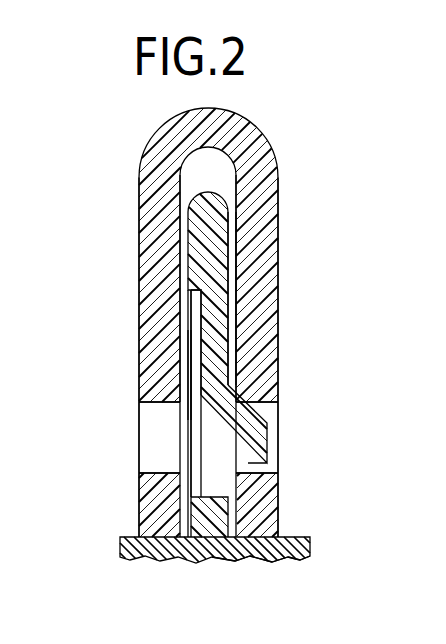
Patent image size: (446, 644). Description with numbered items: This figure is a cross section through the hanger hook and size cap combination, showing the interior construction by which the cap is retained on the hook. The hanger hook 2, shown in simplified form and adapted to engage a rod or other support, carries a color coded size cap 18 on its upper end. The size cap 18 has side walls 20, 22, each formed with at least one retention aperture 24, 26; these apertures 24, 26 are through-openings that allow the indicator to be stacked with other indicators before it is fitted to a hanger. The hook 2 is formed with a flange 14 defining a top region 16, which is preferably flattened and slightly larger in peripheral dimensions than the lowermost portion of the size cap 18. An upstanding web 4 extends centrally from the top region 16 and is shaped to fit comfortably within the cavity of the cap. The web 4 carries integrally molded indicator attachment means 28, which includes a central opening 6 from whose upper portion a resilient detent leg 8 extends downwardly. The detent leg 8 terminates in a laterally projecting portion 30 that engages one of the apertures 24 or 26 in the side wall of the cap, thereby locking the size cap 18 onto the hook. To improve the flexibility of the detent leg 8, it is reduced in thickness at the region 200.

The hanger hook 2 is at (213, 557).
The upstanding web 4 is at (184, 235).
The central opening 6 is at (207, 462).
The resilient detent leg 8 is at (229, 332).
The flange 14 is at (277, 564).
The top region 16 is at (301, 537).
The color coded size cap 18 is at (286, 188).
The side wall 20 is at (140, 343).
The side wall 22 is at (279, 283).
The retention aperture 24 is at (278, 403).
The retention aperture 26 is at (147, 435).
The indicator attachment means 28 is at (178, 368).
The laterally projecting portion 30 is at (264, 435).
The reduced thickness portion 200 is at (189, 297).